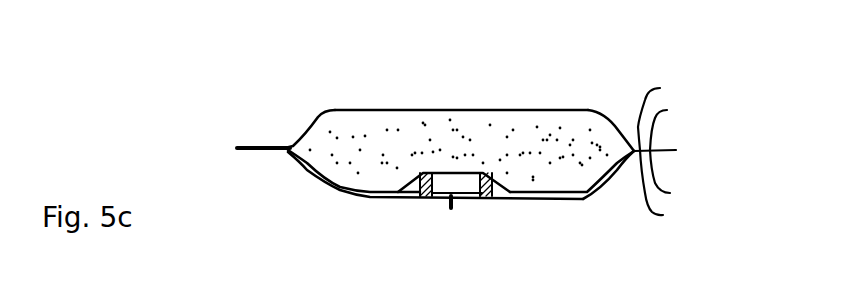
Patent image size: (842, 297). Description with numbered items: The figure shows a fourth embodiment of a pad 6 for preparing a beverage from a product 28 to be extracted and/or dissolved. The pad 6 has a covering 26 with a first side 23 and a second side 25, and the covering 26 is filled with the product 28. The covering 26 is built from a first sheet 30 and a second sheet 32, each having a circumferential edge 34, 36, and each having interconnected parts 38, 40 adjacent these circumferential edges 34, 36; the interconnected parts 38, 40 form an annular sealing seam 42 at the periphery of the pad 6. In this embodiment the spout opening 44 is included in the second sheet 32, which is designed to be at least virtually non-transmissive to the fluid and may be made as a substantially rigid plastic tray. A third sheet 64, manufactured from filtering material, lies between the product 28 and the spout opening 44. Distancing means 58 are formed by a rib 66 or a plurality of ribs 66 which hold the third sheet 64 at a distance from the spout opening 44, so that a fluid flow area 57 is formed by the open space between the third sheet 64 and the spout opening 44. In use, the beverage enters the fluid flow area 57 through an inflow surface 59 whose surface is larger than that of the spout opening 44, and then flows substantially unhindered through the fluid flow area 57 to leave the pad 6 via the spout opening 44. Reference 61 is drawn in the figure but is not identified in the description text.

The pad 6 is at (770, 268).
The first side 23 is at (356, 100).
The second side 25 is at (352, 210).
The covering 26 is at (530, 110).
The product 28 is at (333, 130).
The first sheet 30 is at (578, 110).
The second sheet 32 is at (527, 199).
The circumferential edge 34 is at (668, 115).
The circumferential edge 36 is at (669, 189).
The interconnected part 38 is at (675, 125).
The interconnected part 40 is at (678, 179).
The sealing seam 42 is at (667, 150).
The spout opening 44 is at (450, 210).
The fluid flow area 57 is at (452, 183).
The distancing means 58 is at (425, 199).
The inflow surface 59 is at (469, 171).
The left seal 61 is at (422, 198).
The third sheet 64 is at (565, 199).
The rib 66 is at (488, 199).